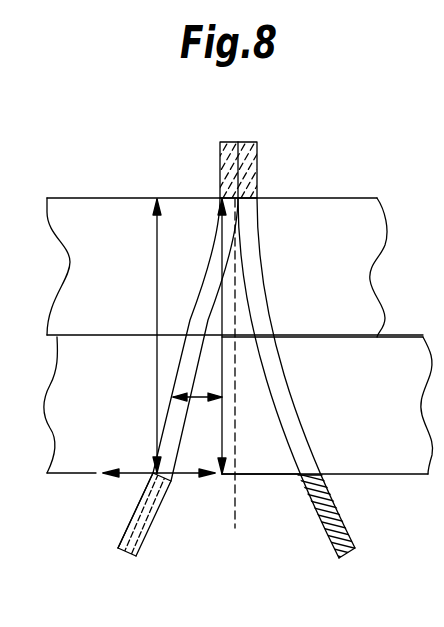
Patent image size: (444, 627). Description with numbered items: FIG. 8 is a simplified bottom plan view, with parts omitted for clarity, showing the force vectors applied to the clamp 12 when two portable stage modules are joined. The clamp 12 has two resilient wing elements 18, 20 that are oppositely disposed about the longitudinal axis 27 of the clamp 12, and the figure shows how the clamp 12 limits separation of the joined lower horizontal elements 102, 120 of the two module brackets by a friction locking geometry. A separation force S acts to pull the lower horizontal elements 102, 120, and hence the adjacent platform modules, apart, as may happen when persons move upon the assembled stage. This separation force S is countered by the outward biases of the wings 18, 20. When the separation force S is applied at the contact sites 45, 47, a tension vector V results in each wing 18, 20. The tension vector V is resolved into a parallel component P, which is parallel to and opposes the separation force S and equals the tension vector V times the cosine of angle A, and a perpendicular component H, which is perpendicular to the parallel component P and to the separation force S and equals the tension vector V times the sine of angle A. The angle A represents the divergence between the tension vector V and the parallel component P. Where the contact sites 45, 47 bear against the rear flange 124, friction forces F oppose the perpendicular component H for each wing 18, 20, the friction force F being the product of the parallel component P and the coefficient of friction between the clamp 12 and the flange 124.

The clamp 12 is at (270, 189).
The resilient wing element 18 is at (343, 518).
The resilient wing element 20 is at (119, 547).
The longitudinal axis 27 is at (236, 528).
The contact site 45 is at (320, 477).
The contact site 47 is at (148, 484).
The lower horizontal element 102 is at (78, 198).
The lower horizontal element 120 is at (386, 476).
The rear flange 124 is at (278, 477).
The separation force S is at (155, 245).
The tension vector V is at (212, 243).
The friction force F is at (140, 477).
The perpendicular component H is at (172, 482).
The angle A is at (203, 399).
The parallel component P is at (222, 443).